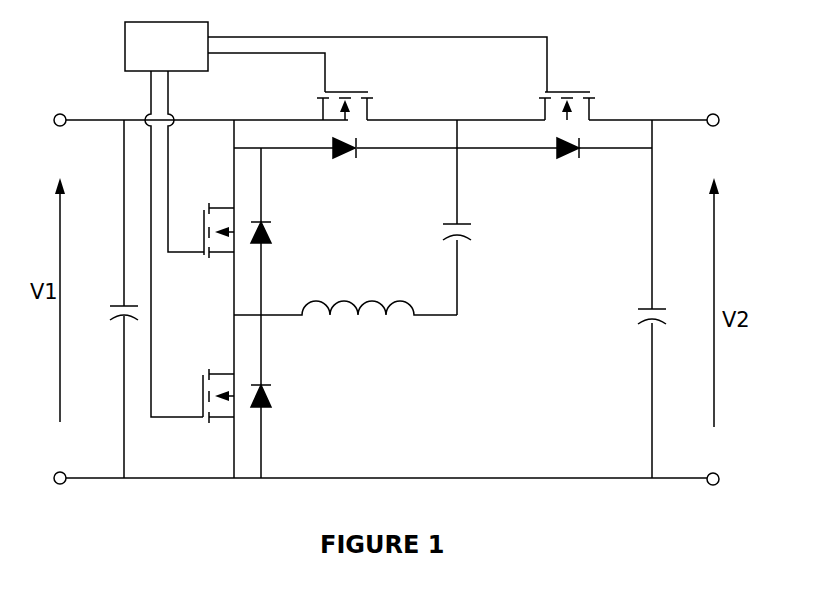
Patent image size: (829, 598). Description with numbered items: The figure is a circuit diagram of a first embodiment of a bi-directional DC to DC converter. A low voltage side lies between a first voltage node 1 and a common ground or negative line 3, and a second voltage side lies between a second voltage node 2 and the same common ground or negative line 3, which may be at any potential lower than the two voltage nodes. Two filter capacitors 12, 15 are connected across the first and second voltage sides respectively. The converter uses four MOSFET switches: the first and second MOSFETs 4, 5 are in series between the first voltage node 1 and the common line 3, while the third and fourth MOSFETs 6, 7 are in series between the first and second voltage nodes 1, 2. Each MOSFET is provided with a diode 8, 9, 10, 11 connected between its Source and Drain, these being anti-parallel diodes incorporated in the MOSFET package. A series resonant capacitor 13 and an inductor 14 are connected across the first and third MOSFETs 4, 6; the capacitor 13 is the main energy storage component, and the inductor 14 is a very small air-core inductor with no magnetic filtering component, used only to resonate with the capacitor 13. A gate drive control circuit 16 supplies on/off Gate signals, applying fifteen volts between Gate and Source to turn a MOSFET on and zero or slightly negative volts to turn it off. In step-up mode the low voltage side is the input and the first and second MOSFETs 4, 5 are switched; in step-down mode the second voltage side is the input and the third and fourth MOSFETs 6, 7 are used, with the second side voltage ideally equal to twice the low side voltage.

The first voltage node 1 is at (51, 121).
The second voltage node 2 is at (724, 126).
The common ground or negative line 3 is at (386, 469).
The first MOSFET 4 is at (206, 230).
The second MOSFET 5 is at (206, 396).
The third MOSFET 6 is at (345, 90).
The fourth MOSFET 7 is at (567, 91).
The diode 8 is at (270, 234).
The diode 9 is at (270, 397).
The diode 10 is at (344, 161).
The diode 11 is at (565, 163).
The filter capacitor 12 is at (115, 299).
The series resonant capacitor 13 is at (466, 220).
The inductor 14 is at (345, 297).
The filter capacitor 15 is at (642, 306).
The gate drive control circuit 16 is at (166, 46).